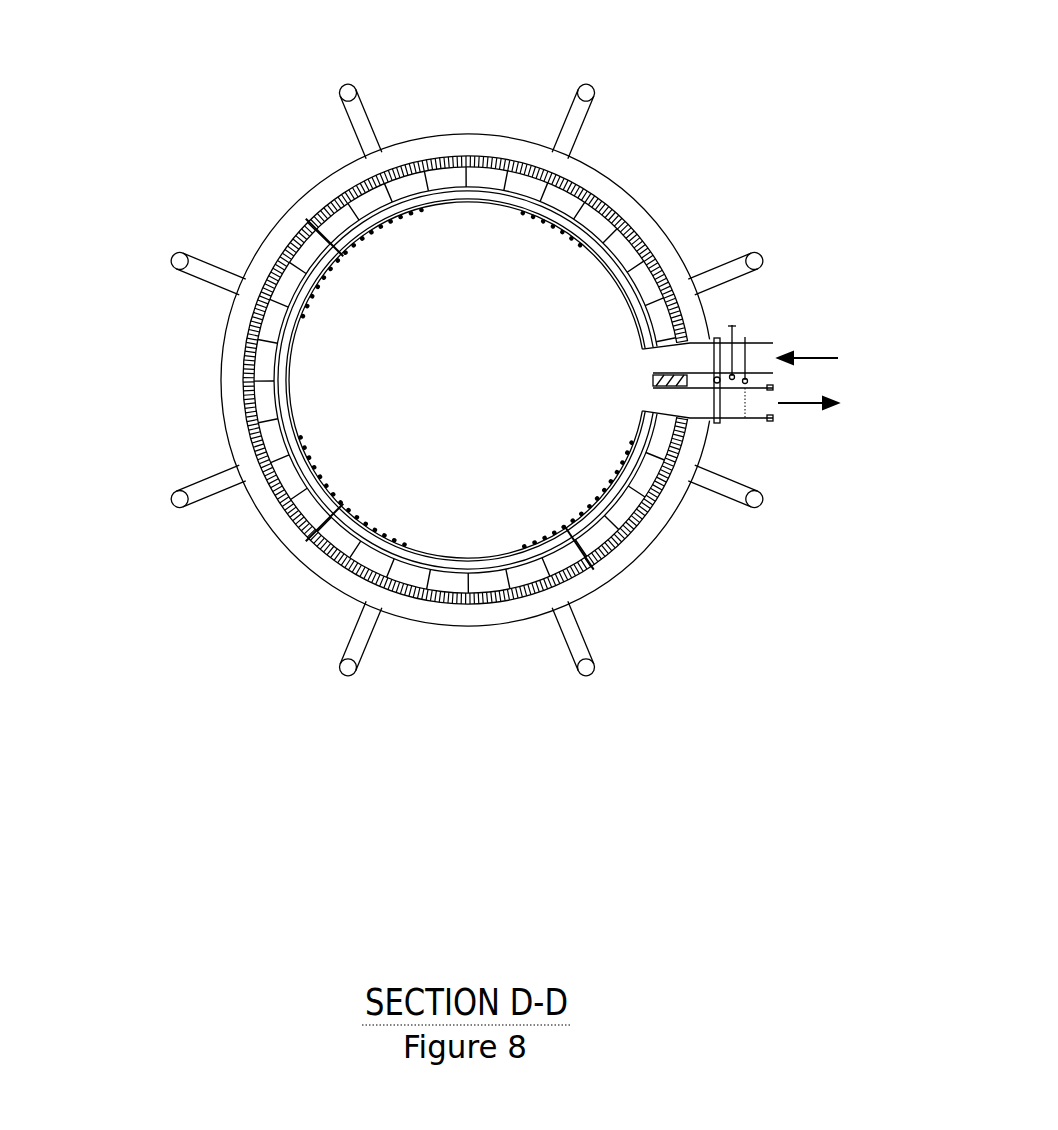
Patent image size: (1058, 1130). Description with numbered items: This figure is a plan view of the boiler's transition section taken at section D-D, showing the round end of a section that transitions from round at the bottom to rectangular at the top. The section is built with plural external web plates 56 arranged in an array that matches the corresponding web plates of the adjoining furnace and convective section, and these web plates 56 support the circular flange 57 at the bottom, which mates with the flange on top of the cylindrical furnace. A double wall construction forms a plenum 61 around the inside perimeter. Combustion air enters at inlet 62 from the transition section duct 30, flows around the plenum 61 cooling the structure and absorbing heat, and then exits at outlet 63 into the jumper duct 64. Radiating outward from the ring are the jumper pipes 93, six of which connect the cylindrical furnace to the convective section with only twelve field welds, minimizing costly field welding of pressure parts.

The transition section duct 30 is at (763, 343).
The external web plates 56 is at (307, 540).
The circular flange 57 is at (293, 242).
The plenum 61 is at (322, 232).
The combustion air inlet 62 is at (670, 365).
The combustion air outlet 63 is at (663, 398).
The jumper duct 64 is at (757, 420).
The jumper pipes 93 is at (212, 474).